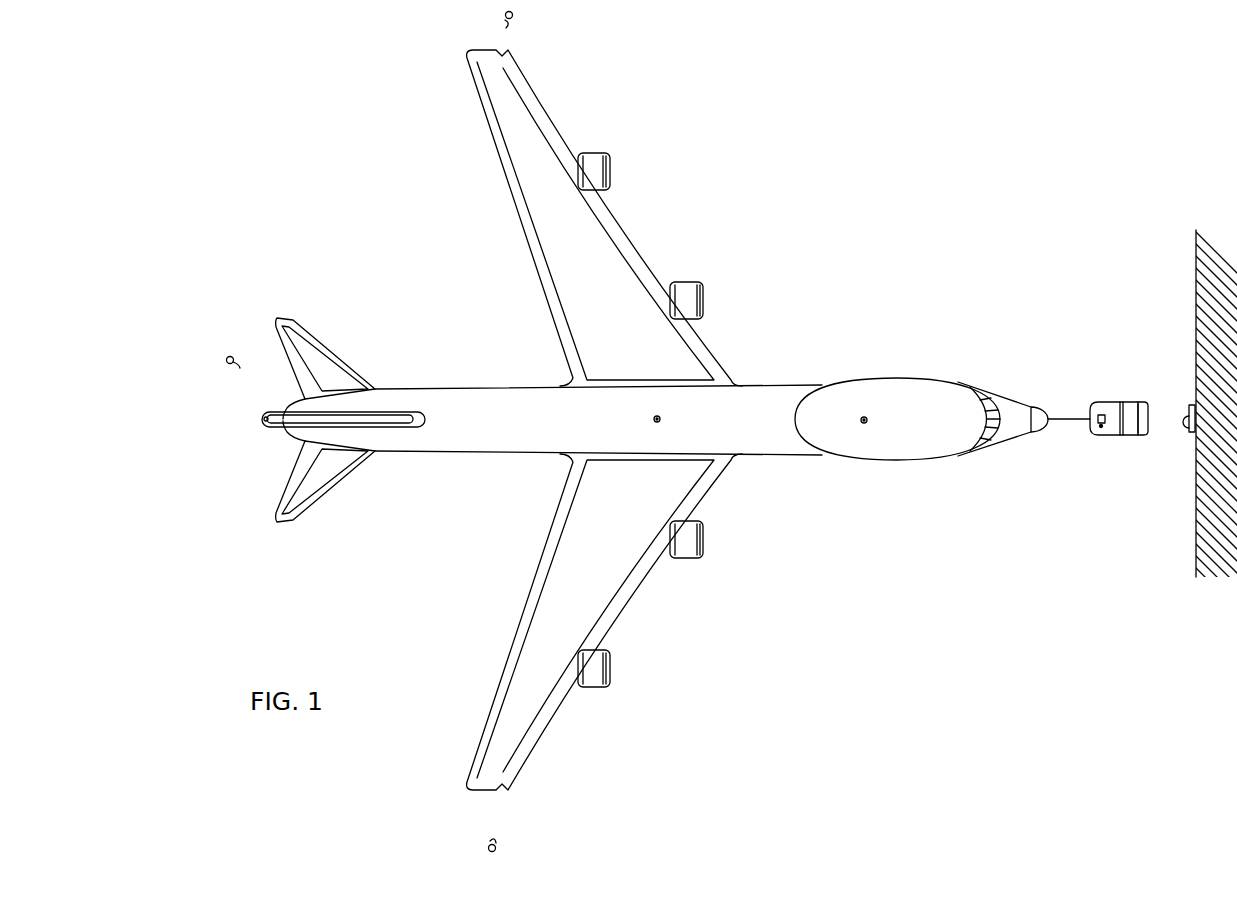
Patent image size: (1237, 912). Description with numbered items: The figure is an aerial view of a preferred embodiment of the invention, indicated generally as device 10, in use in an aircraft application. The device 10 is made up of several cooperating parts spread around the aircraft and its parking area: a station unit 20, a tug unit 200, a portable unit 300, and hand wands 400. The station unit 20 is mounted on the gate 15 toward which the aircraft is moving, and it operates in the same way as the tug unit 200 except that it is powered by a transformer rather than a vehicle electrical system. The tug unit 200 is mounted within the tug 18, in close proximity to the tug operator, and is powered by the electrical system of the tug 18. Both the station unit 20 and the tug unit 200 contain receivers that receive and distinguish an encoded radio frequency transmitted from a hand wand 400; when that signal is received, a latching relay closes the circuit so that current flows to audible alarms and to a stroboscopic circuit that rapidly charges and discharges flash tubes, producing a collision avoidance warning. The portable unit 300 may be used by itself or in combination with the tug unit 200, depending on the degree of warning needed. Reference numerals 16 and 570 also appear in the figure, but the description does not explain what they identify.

The device 10 is at (370, 178).
The gate 15 is at (1195, 504).
The strobe light 16 is at (498, 16).
The tug 18 is at (1128, 436).
The station unit 20 is at (1185, 422).
The tug unit 200 is at (1120, 404).
The portable unit 300 is at (1102, 425).
The hand wands 400 is at (513, 17).
The fuselage 570 is at (787, 445).